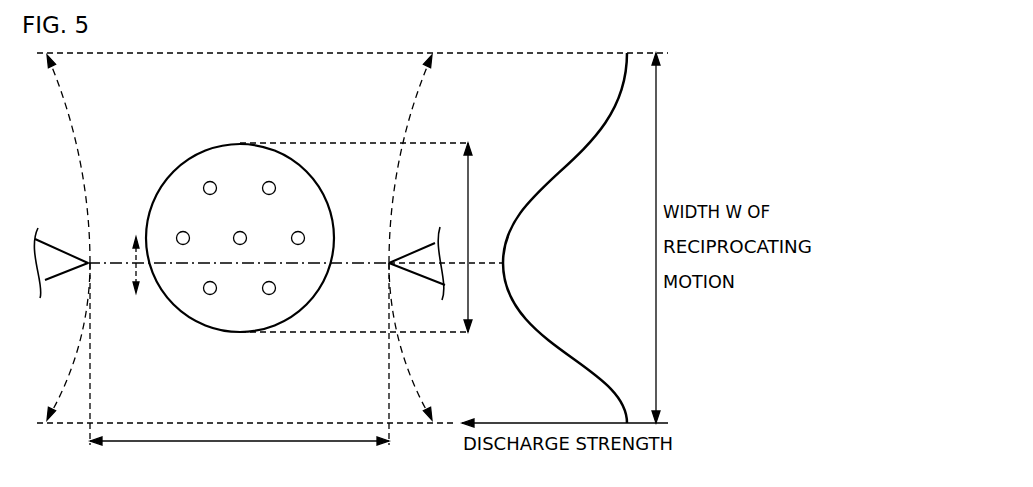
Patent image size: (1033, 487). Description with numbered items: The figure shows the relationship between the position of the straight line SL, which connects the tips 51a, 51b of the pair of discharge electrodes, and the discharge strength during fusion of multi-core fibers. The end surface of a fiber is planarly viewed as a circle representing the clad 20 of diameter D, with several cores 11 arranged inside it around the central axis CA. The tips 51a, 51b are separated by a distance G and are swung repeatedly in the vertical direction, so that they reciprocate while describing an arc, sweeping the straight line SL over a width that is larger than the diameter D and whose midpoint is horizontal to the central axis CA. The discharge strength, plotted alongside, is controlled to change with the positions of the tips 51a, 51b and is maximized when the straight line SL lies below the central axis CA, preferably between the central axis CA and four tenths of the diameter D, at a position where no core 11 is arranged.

The clad 20 is at (236, 152).
The core 11 is at (270, 183).
The tip of discharge electrode 51a is at (84, 260).
The tip of discharge electrode 51b is at (395, 267).
The straight line SL is at (110, 263).
The central axis CA is at (239, 244).
The diameter of the clad D is at (361, 237).
The distance between tips G is at (239, 449).